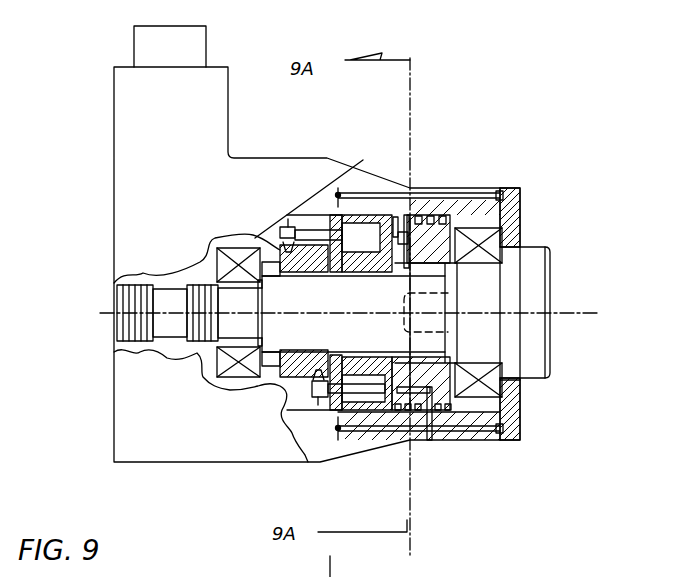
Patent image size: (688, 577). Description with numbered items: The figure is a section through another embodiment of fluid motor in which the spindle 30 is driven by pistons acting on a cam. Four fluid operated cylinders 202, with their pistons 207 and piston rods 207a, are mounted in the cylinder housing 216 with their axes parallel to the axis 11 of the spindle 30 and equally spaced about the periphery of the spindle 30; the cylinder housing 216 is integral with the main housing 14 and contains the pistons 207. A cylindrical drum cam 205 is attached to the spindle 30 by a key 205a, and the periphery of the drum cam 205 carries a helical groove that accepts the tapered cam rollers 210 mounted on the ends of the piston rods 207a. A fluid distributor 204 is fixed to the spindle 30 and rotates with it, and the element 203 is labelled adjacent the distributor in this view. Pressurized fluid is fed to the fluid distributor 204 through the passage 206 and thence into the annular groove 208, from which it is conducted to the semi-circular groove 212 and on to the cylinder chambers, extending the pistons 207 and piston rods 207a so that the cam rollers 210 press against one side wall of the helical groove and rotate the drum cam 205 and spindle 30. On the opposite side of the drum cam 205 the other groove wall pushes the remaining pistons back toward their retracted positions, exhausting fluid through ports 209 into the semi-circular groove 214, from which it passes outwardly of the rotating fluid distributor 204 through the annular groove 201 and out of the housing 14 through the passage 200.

The axis 11 is at (572, 313).
The main housing 14 is at (492, 442).
The spindle 30 is at (535, 245).
The passage 200 is at (345, 190).
The annular groove 201 is at (435, 215).
The fluid operated cylinder 202 is at (360, 218).
The spline teeth 203 is at (466, 215).
The fluid distributor 204 is at (505, 192).
The cylindrical drum cam 205 is at (298, 380).
The key 205a is at (288, 298).
The passage 206 is at (342, 415).
The piston 207 is at (403, 412).
The piston rod 207a is at (312, 218).
The annular groove 208 is at (440, 420).
The port 209 is at (387, 217).
The collar 210 is at (262, 240).
The semi-circular groove 212 is at (407, 383).
The semi-circular groove 214 is at (418, 190).
The cylinder housing 216 is at (345, 432).